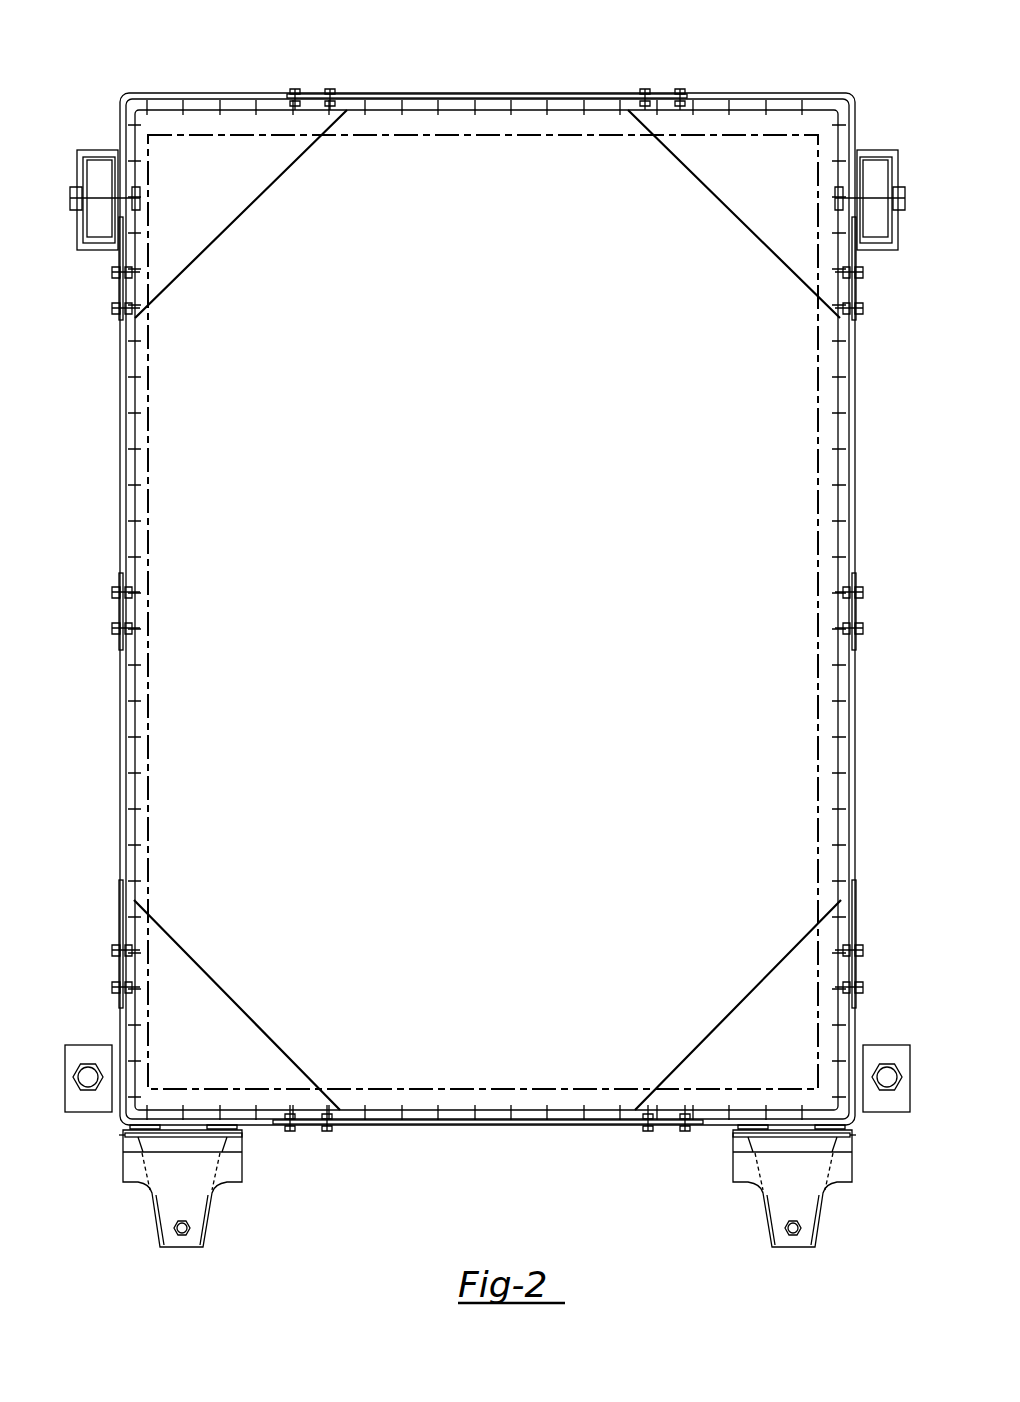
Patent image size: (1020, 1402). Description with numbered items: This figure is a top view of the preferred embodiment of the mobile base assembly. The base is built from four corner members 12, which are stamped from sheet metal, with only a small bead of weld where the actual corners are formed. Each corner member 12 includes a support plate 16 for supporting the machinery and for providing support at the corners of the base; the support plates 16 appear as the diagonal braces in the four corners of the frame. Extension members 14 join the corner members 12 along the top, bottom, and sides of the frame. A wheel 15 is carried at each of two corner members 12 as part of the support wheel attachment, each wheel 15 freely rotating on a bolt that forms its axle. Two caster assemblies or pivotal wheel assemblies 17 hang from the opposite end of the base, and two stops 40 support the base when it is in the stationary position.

The corner member 12 is at (229, 85).
The extension member 14 is at (495, 93).
The wheel 15 is at (100, 180).
The support plate 16 is at (210, 196).
The caster assembly 17 is at (258, 1198).
The stop 40 is at (72, 1028).